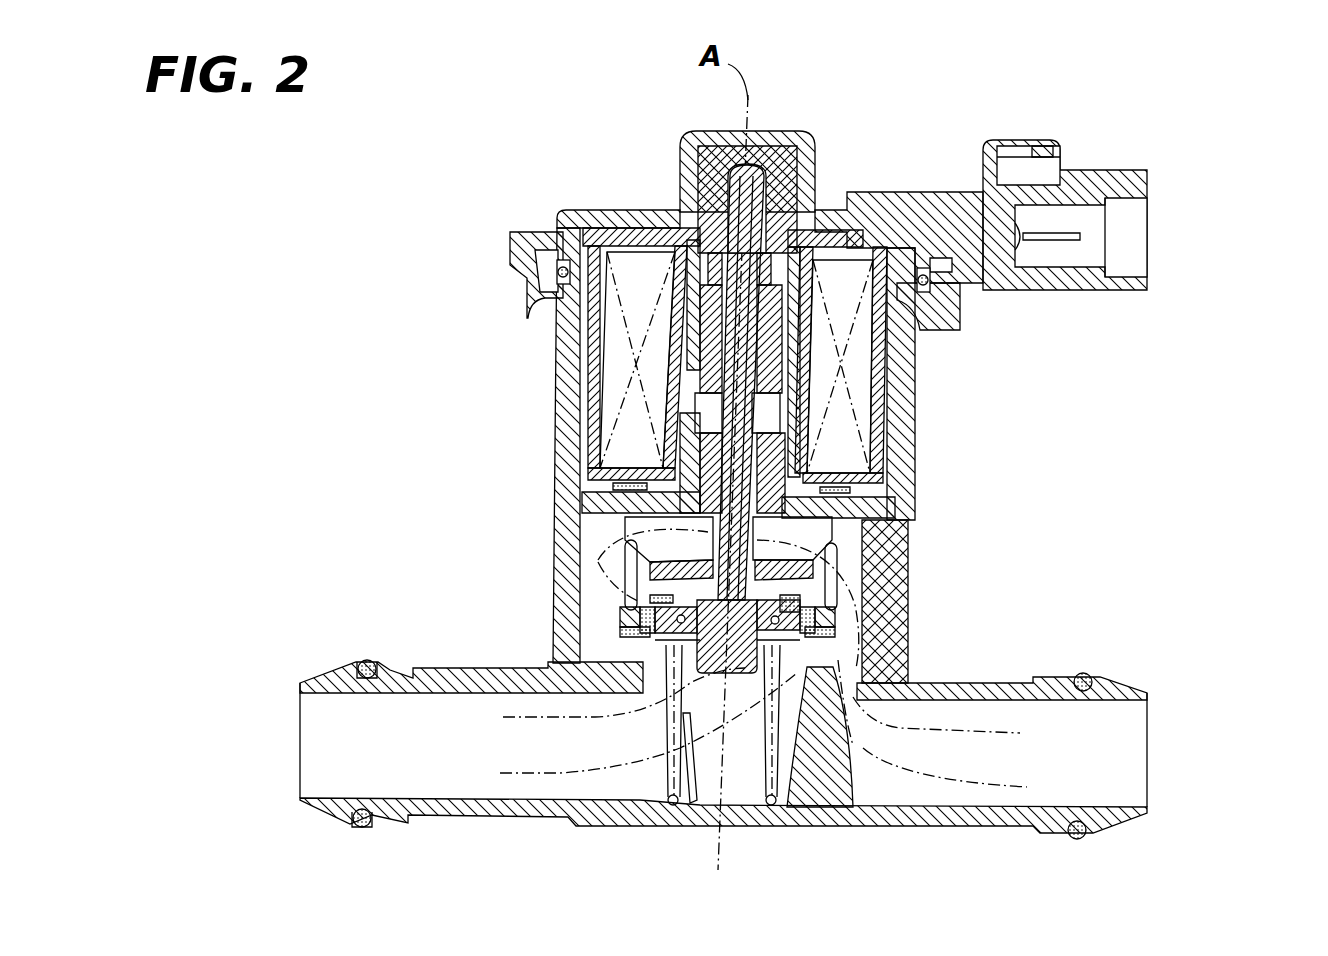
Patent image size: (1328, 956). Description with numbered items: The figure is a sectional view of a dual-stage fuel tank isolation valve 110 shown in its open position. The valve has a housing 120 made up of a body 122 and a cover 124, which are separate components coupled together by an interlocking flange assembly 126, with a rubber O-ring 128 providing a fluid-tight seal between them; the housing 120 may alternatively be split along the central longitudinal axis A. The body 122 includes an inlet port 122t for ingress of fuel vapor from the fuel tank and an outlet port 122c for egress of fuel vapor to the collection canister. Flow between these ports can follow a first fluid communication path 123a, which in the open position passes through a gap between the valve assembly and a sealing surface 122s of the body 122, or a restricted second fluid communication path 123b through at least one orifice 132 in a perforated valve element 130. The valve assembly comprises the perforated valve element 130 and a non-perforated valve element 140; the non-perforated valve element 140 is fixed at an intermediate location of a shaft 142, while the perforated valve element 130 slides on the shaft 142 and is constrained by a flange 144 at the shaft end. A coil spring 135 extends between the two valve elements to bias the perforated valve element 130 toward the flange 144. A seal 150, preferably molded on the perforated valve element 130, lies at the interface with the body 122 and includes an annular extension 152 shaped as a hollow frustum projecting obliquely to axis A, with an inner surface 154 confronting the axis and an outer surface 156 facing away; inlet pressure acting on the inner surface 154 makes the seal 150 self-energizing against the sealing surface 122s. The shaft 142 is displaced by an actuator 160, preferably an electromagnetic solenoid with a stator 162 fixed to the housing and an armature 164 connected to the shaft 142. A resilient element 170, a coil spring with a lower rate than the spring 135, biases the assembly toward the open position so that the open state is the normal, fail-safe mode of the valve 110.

The fuel tank isolation valve 110 is at (1252, 190).
The housing 120 is at (412, 270).
The body 122 is at (565, 376).
The cover 124 is at (571, 210).
The interlocking flange assembly 126 is at (950, 290).
The O-ring 128 is at (912, 250).
The perforated valve element 130 is at (840, 627).
The orifice 132 is at (652, 612).
The coil spring 135 is at (655, 590).
The non-perforated valve element 140 is at (813, 577).
The shaft 142 is at (737, 190).
The flange 144 is at (840, 768).
The seal 150 is at (835, 640).
The annular extension 152 is at (820, 652).
The inner surface 154 is at (660, 648).
The outer surface 156 is at (648, 634).
The actuator 160 is at (612, 393).
The stator 162 is at (780, 438).
The armature 164 is at (775, 322).
The resilient element 170 is at (777, 680).
The inlet port 122t is at (303, 772).
The outlet port 122c is at (1143, 797).
The sealing surface 122s is at (650, 660).
The first fluid communication path 123a is at (590, 778).
The second fluid communication path 123b is at (525, 718).